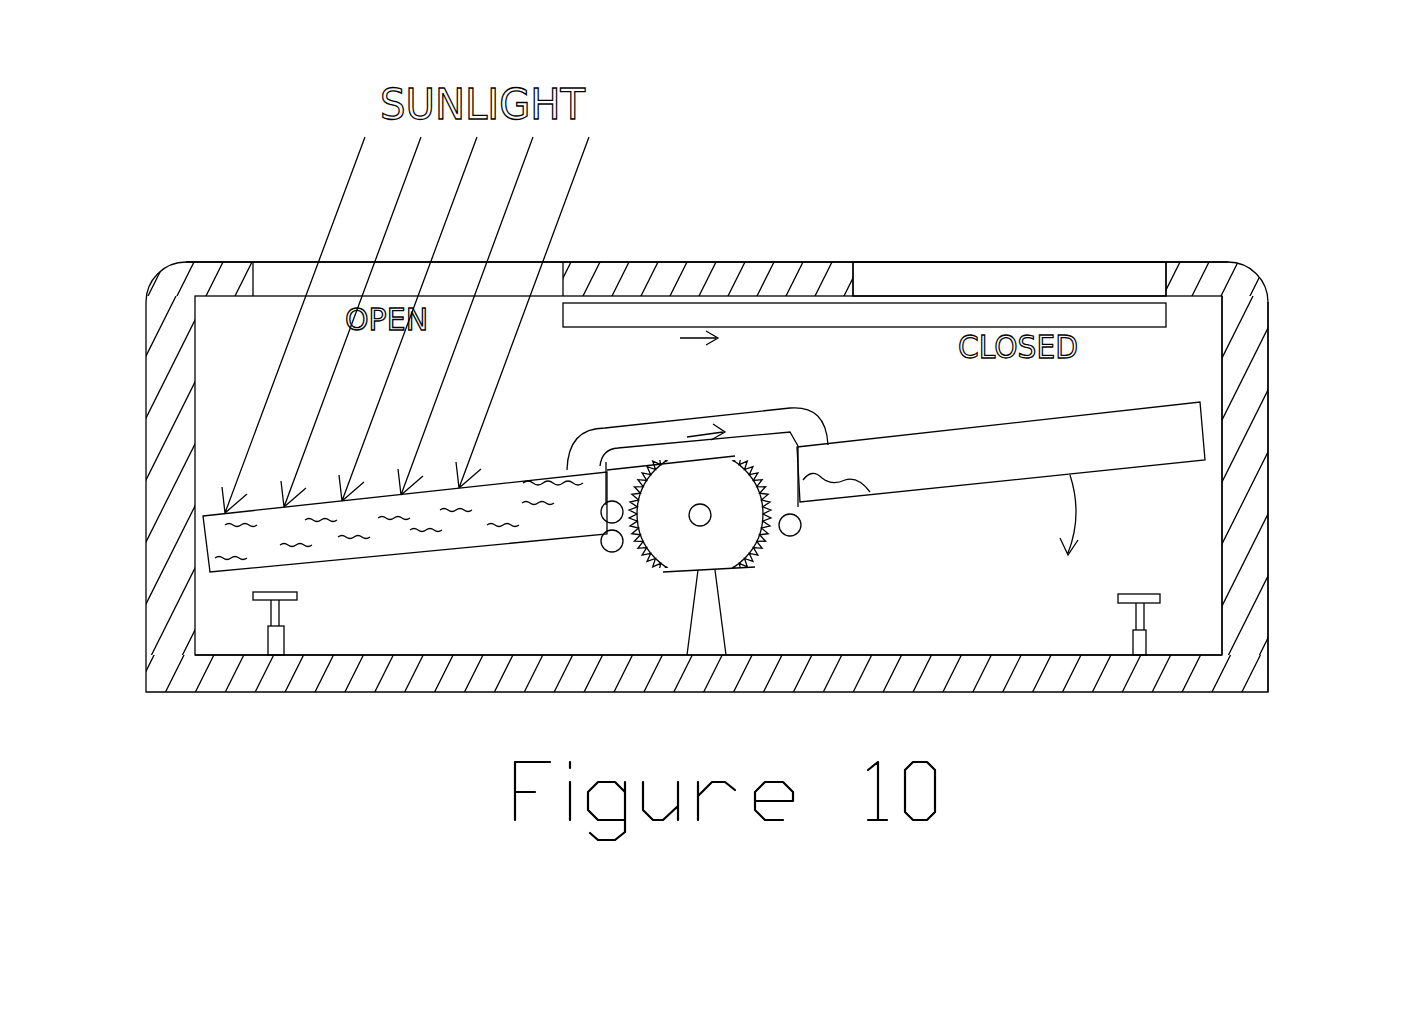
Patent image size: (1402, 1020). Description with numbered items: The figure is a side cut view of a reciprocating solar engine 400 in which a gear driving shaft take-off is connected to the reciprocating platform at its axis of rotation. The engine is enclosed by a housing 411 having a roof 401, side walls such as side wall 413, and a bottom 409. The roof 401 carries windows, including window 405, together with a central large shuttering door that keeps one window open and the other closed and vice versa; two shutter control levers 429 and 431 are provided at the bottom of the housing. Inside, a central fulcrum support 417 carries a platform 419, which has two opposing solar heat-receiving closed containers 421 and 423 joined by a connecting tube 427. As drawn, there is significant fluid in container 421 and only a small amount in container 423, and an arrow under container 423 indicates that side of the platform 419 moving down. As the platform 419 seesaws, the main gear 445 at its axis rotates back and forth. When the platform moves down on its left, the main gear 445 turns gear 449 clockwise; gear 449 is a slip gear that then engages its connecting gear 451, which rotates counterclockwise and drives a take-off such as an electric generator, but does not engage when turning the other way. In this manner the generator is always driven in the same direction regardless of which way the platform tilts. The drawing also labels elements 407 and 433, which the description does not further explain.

The reciprocating solar engine 400 is at (743, 186).
The roof 401 is at (623, 262).
The window 405 is at (1103, 283).
The lid guide shelf 407 is at (871, 322).
The bottom 409 is at (836, 655).
The housing 411 is at (1270, 487).
The side wall 413 is at (147, 508).
The central fulcrum support 417 is at (705, 590).
The platform 419 is at (797, 505).
The solar heat-receiving closed container 421 is at (513, 478).
The solar heat-receiving closed container 423 is at (893, 438).
The connecting tube 427 is at (617, 445).
The shutter control lever 429 is at (278, 610).
The shutter control lever 431 is at (1137, 612).
The pivot shaft 433 is at (698, 517).
The main gear 445 is at (683, 553).
The gear 449 is at (600, 513).
The connecting gear 451 is at (600, 540).